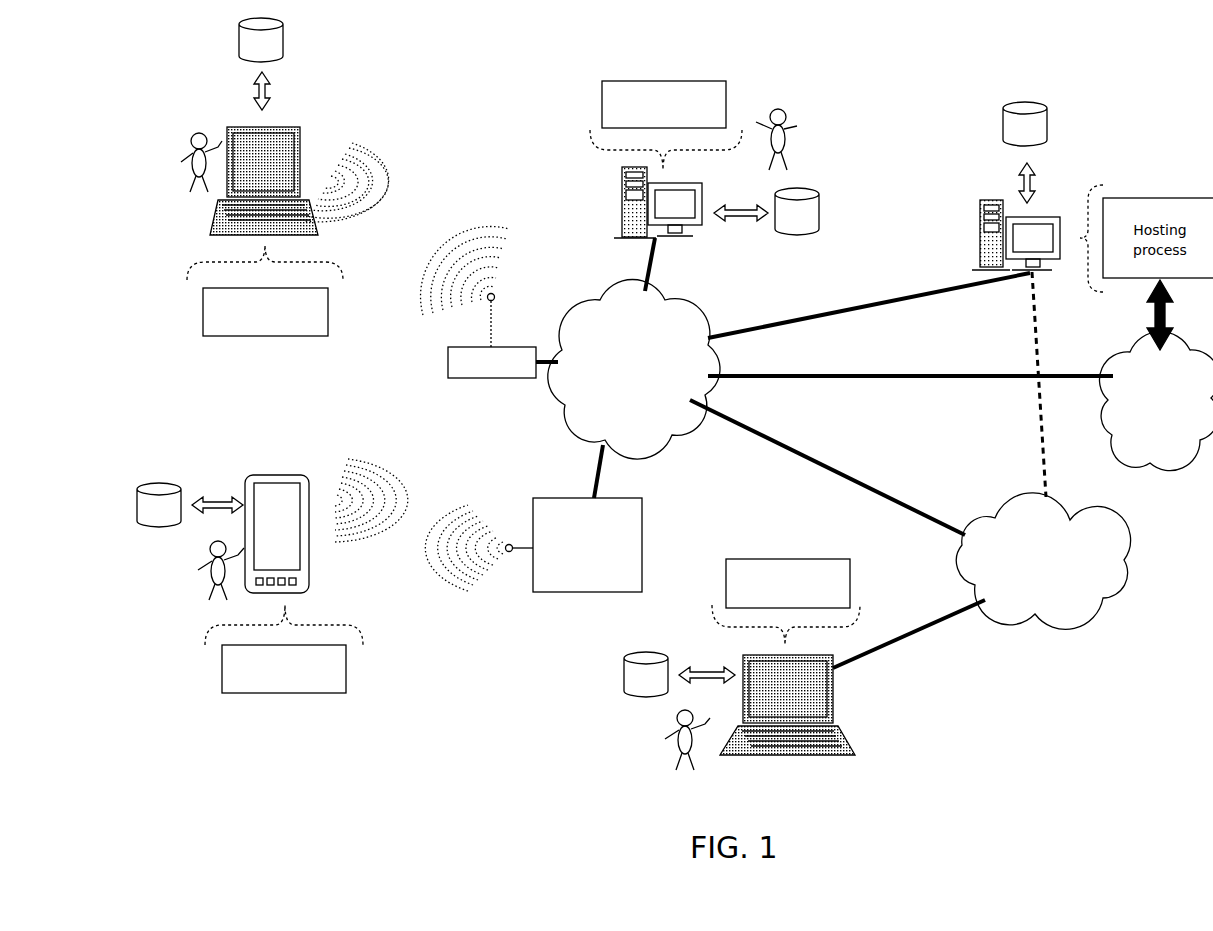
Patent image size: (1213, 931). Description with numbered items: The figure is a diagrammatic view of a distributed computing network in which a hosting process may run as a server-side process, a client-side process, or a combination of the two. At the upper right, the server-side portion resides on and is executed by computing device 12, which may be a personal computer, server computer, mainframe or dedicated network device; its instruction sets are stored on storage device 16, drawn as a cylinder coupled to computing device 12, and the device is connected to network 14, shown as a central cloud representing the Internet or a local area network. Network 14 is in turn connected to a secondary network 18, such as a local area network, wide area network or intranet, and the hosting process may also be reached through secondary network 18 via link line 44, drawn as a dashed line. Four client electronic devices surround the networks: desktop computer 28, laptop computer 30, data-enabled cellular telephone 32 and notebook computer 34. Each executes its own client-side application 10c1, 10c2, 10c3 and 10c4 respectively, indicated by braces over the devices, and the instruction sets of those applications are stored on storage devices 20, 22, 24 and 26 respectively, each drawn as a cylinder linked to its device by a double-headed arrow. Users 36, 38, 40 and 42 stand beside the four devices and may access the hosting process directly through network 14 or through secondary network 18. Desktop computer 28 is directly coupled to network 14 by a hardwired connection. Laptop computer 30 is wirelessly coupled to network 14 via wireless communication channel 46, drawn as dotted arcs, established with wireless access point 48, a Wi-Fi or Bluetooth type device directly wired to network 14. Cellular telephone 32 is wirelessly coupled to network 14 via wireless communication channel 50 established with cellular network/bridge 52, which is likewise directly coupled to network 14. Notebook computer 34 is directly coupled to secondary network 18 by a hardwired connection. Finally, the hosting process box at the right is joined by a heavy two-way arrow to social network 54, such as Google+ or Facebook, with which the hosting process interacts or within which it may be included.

The computing device 12 is at (980, 213).
The network 14 is at (634, 369).
The storage device 16 is at (1025, 152).
The secondary network 18 is at (1043, 561).
The storage device 20 is at (766, 211).
The storage device 22 is at (261, 64).
The storage device 24 is at (190, 505).
The storage device 26 is at (679, 674).
The desktop computer 28 is at (703, 200).
The laptop computer 30 is at (301, 142).
The data-enabled, cellular telephone 32 is at (318, 532).
The notebook computer 34 is at (834, 700).
The user 36 is at (798, 122).
The user 38 is at (165, 150).
The user 40 is at (195, 557).
The user 42 is at (652, 735).
The link line 44 is at (1020, 414).
The wireless communication channel 46 is at (436, 197).
The wireless access point 48 is at (443, 361).
The wireless communication channel 50 is at (427, 500).
The cellular network/bridge 52 is at (643, 512).
The social network 54 is at (1156, 401).
The client-side application 10c1 is at (728, 106).
The client-side application 10c2 is at (328, 312).
The client-side application 10c3 is at (346, 670).
The client-side application 10c4 is at (851, 578).